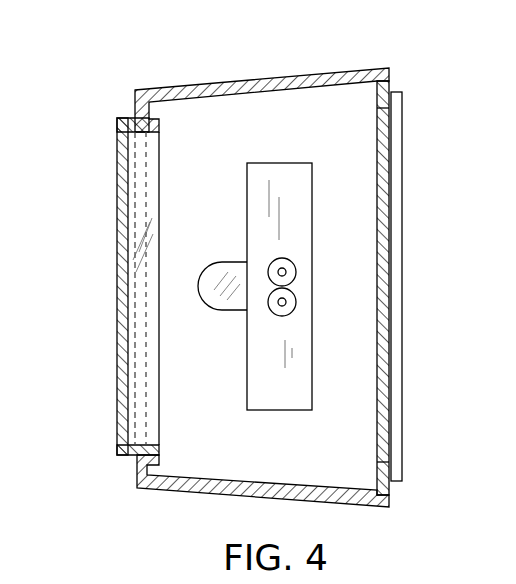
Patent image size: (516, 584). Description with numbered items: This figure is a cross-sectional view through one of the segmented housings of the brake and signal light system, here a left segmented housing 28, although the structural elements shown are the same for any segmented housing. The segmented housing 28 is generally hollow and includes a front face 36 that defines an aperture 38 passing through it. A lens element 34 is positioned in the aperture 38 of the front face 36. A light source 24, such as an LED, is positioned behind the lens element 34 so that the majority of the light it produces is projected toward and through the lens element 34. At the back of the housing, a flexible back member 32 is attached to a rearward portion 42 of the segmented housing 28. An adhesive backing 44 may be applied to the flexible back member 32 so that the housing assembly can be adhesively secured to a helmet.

The light source 24 is at (216, 268).
The left segmented housing 28 is at (273, 80).
The flexible back member 32 is at (392, 305).
The lens element 34 is at (121, 284).
The front face 36 is at (133, 106).
The aperture 38 is at (125, 462).
The rearward portion 42 is at (390, 82).
The adhesive backing 44 is at (399, 170).